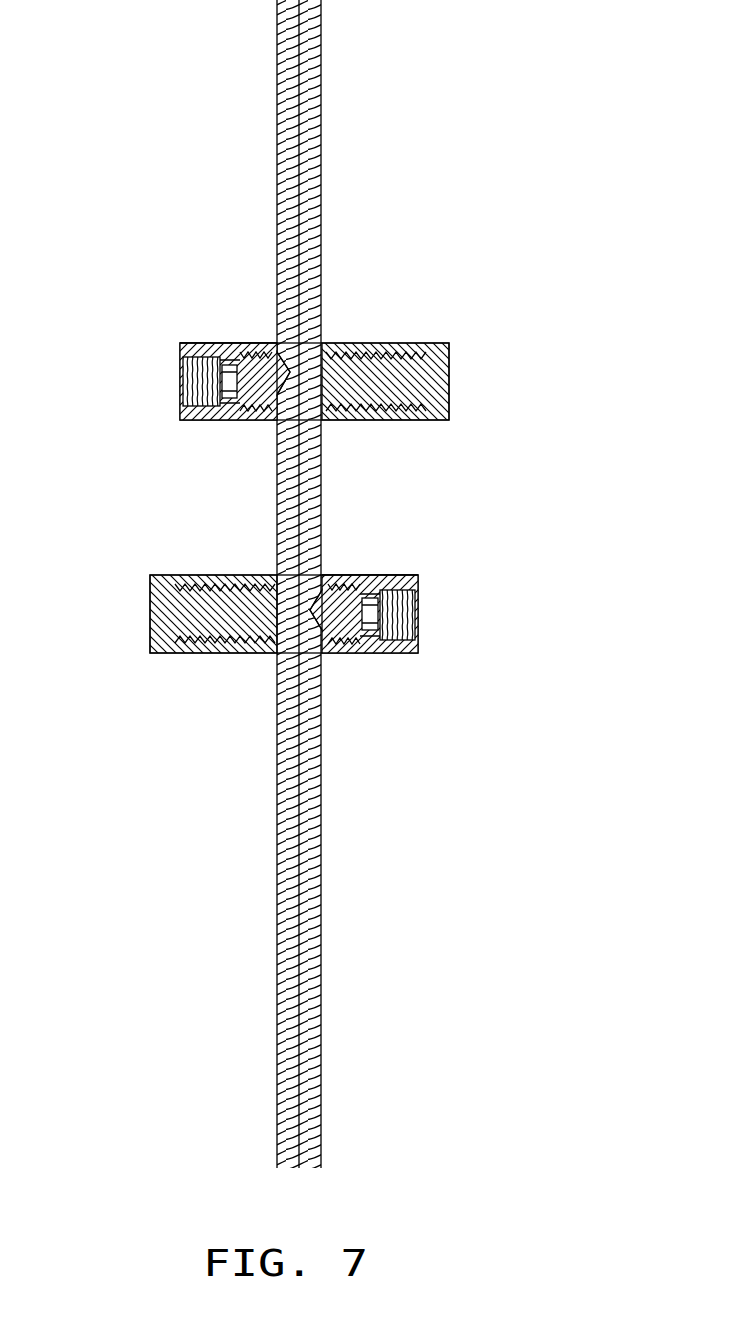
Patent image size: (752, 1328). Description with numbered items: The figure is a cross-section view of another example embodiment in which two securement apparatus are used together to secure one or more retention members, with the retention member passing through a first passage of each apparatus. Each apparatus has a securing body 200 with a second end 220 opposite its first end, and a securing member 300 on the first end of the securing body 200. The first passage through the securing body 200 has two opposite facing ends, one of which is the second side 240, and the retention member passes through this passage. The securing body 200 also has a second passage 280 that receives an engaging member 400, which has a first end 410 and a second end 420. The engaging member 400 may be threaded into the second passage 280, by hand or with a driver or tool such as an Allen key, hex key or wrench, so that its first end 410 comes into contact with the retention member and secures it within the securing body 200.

The securing body 200 is at (246, 422).
The second end 220 is at (179, 343).
The second side 240 is at (277, 421).
The second passage 280 is at (179, 382).
The securing member 300 is at (437, 388).
The engaging member 400 is at (272, 348).
The first end 410 is at (332, 421).
The second end 420 is at (245, 344).